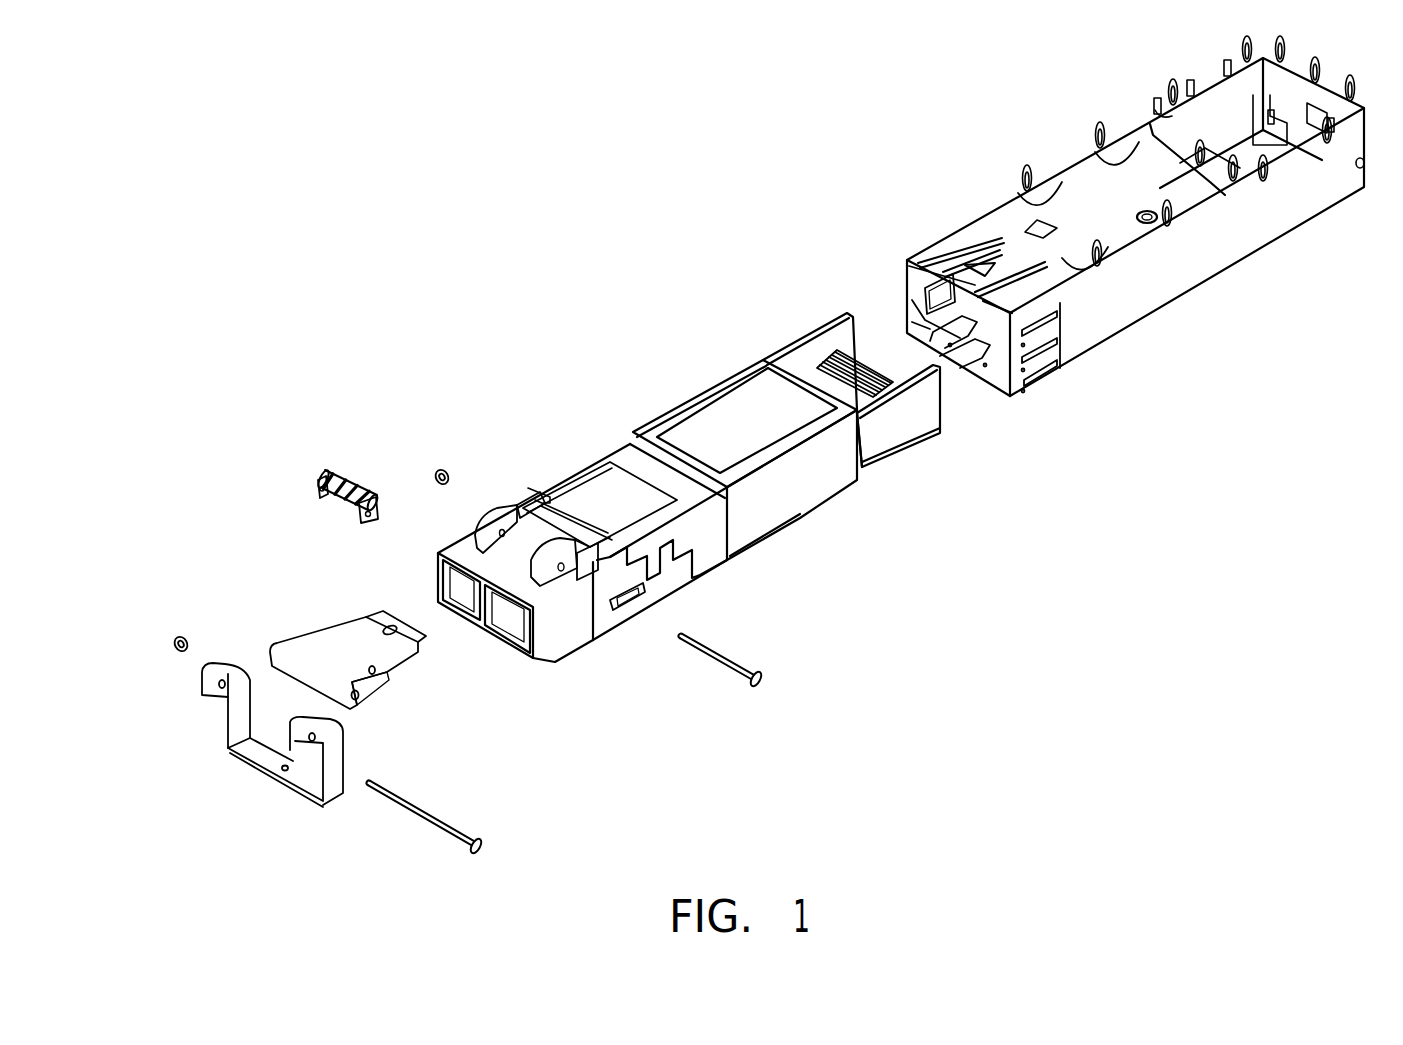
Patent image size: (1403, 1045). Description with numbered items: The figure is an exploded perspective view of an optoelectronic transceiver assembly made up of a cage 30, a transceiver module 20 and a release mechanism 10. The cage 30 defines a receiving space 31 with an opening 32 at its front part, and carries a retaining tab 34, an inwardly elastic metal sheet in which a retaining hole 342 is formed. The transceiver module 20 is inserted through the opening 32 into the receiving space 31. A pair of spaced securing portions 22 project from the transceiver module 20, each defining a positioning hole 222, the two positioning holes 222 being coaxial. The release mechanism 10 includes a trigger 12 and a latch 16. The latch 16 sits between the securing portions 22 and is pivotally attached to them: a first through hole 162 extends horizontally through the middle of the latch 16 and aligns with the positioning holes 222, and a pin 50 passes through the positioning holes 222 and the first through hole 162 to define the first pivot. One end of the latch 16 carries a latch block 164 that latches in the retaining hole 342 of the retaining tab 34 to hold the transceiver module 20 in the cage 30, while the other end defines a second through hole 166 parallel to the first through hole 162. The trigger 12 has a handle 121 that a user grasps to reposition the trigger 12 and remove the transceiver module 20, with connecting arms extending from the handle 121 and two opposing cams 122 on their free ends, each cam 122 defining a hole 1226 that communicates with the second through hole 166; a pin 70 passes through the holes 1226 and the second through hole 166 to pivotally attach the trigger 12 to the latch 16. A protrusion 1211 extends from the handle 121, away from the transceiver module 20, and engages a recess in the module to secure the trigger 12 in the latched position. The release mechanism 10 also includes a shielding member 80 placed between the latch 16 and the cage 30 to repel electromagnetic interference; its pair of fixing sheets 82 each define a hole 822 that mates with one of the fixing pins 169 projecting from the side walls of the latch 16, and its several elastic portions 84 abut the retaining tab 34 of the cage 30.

The release mechanism 10 is at (203, 552).
The trigger 12 is at (290, 710).
The handle 121 is at (256, 802).
The protrusion 1211 is at (283, 776).
The cams 122 is at (290, 764).
The hole 1226 is at (221, 699).
The latch 16 is at (371, 637).
The first through hole 162 is at (374, 676).
The latch block 164 is at (388, 626).
The second through hole 166 is at (360, 699).
The fixing pins 169 is at (376, 669).
The transceiver module 20 is at (689, 522).
The securing portions 22 is at (566, 634).
The positioning hole 222 is at (566, 571).
The cage 30 is at (1097, 249).
The receiving space 31 is at (988, 330).
The opening 32 is at (935, 326).
The retaining tab 34 is at (922, 229).
The retaining hole 342 is at (987, 262).
The pin 50 is at (720, 663).
The pin 70 is at (432, 815).
The shielding member 80 is at (351, 491).
The fixing sheets 82 is at (402, 528).
The hole 822 is at (375, 513).
The elastic portions 84 is at (374, 474).